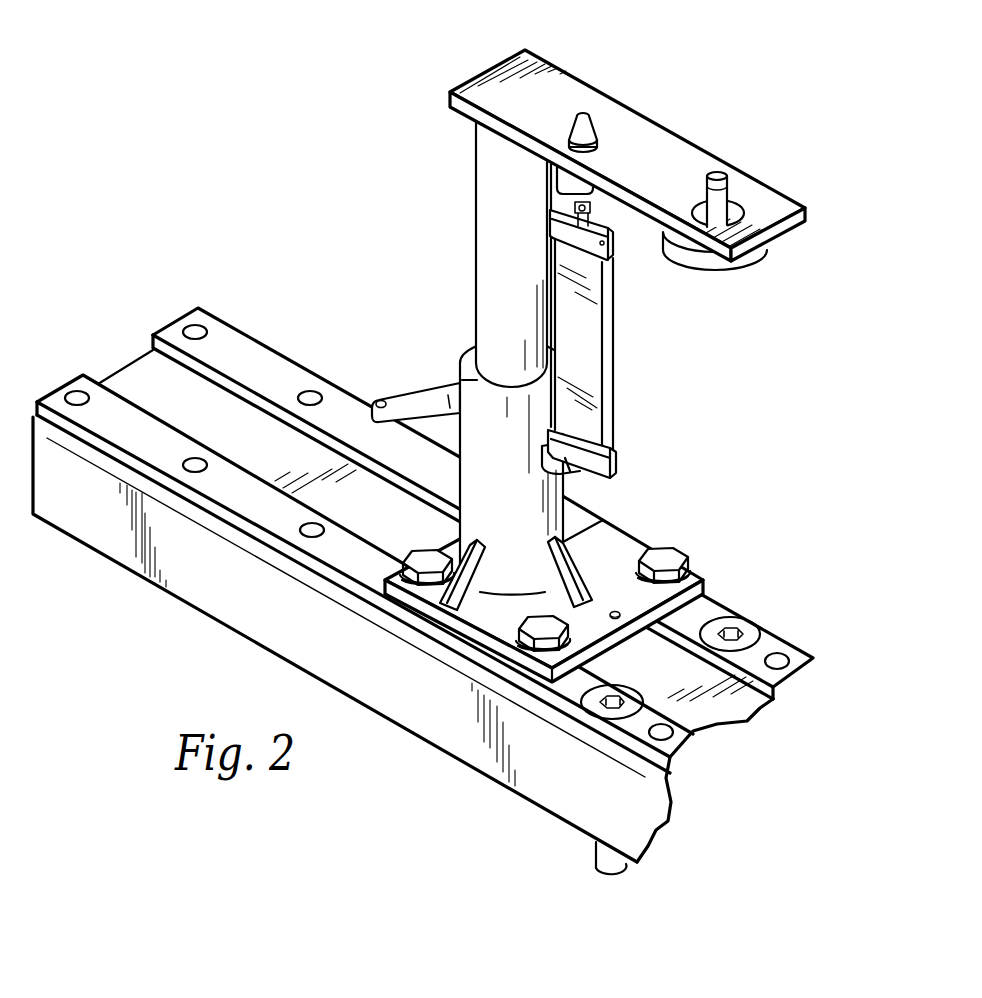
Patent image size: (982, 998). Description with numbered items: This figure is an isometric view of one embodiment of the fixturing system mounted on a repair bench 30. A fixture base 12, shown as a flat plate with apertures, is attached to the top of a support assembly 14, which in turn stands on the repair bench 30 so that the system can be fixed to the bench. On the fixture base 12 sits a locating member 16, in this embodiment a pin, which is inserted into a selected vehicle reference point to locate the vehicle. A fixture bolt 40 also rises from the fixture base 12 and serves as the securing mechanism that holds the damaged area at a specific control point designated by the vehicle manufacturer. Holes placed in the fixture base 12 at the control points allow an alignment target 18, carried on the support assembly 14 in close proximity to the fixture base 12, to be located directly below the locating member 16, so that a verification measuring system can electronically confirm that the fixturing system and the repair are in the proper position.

The fixture base 12 is at (680, 137).
The support assembly 14 is at (553, 497).
The locating member 16 is at (592, 128).
The alignment target 18 is at (592, 358).
The repair bench 30 is at (787, 652).
The fixture bolt 40 is at (730, 204).